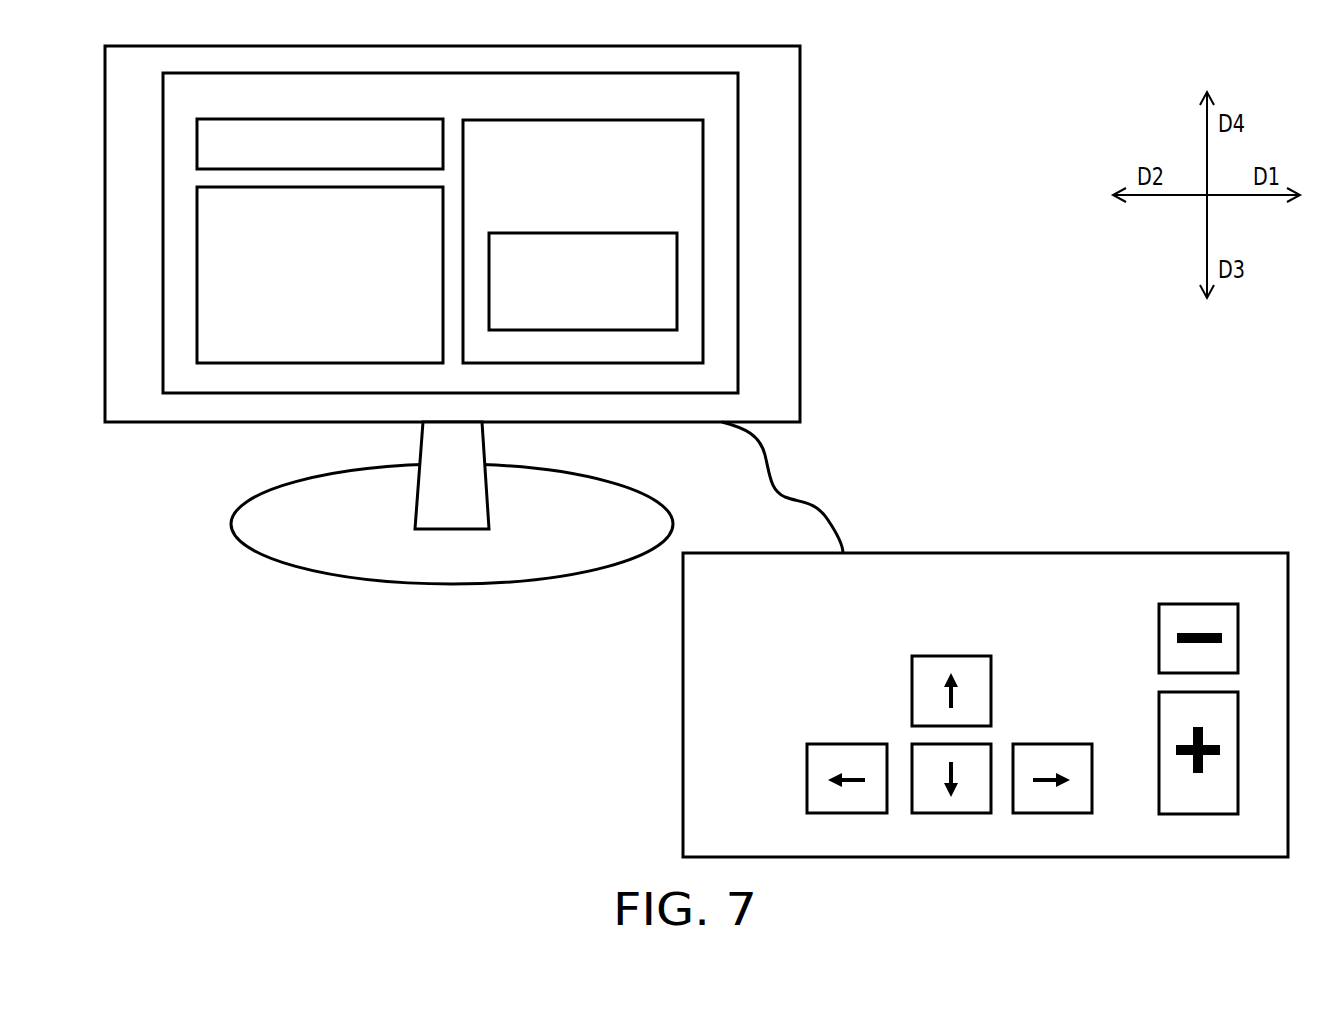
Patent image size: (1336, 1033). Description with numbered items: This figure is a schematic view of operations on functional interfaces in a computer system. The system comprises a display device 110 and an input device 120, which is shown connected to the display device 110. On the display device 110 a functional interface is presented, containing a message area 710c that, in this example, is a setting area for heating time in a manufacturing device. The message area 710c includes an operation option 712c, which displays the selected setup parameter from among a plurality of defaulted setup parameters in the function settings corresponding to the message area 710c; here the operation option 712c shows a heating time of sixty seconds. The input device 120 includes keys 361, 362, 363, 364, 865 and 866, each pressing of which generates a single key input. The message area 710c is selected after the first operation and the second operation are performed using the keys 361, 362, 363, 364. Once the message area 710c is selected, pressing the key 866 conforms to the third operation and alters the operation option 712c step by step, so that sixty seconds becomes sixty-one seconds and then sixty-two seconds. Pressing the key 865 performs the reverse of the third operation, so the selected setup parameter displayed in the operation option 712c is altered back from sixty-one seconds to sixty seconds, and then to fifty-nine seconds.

The display device 110 is at (801, 132).
The input device 120 is at (1104, 553).
The message area 710c is at (583, 120).
The operation option 712c is at (583, 233).
The key 361 is at (1052, 744).
The key 362 is at (951, 813).
The key 363 is at (830, 744).
The key 364 is at (951, 656).
The key 865 is at (1198, 604).
The key 866 is at (1196, 814).